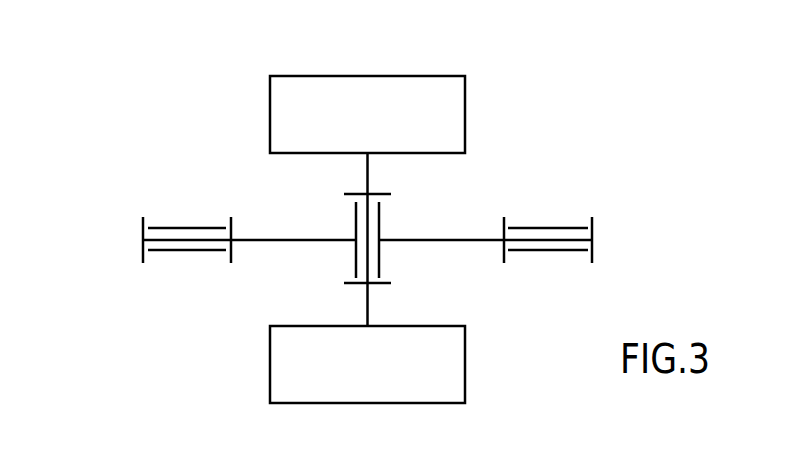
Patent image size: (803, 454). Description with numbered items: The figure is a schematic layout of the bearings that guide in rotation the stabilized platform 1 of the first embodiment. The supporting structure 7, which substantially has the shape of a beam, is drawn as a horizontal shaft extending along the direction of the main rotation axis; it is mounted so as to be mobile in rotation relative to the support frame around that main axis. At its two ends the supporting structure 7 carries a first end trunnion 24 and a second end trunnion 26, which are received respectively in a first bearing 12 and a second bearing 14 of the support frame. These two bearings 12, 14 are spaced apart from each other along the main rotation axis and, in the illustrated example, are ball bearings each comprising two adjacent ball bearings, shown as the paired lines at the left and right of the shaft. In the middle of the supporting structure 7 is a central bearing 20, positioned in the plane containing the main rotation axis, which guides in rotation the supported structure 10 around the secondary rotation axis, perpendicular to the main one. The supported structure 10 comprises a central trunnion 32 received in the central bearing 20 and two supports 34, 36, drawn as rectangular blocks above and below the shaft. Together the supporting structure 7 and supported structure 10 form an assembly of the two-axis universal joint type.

The stabilized platform 1 is at (118, 108).
The supporting structure 7 is at (106, 243).
The supported structure 10 is at (440, 58).
The first bearing 12 is at (187, 243).
The second bearing 14 is at (548, 243).
The central bearing 20 is at (366, 237).
The first end trunnion 24 is at (167, 238).
The second end trunnion 26 is at (567, 238).
The central trunnion 32 is at (362, 227).
The support 34 is at (455, 103).
The support 36 is at (455, 370).